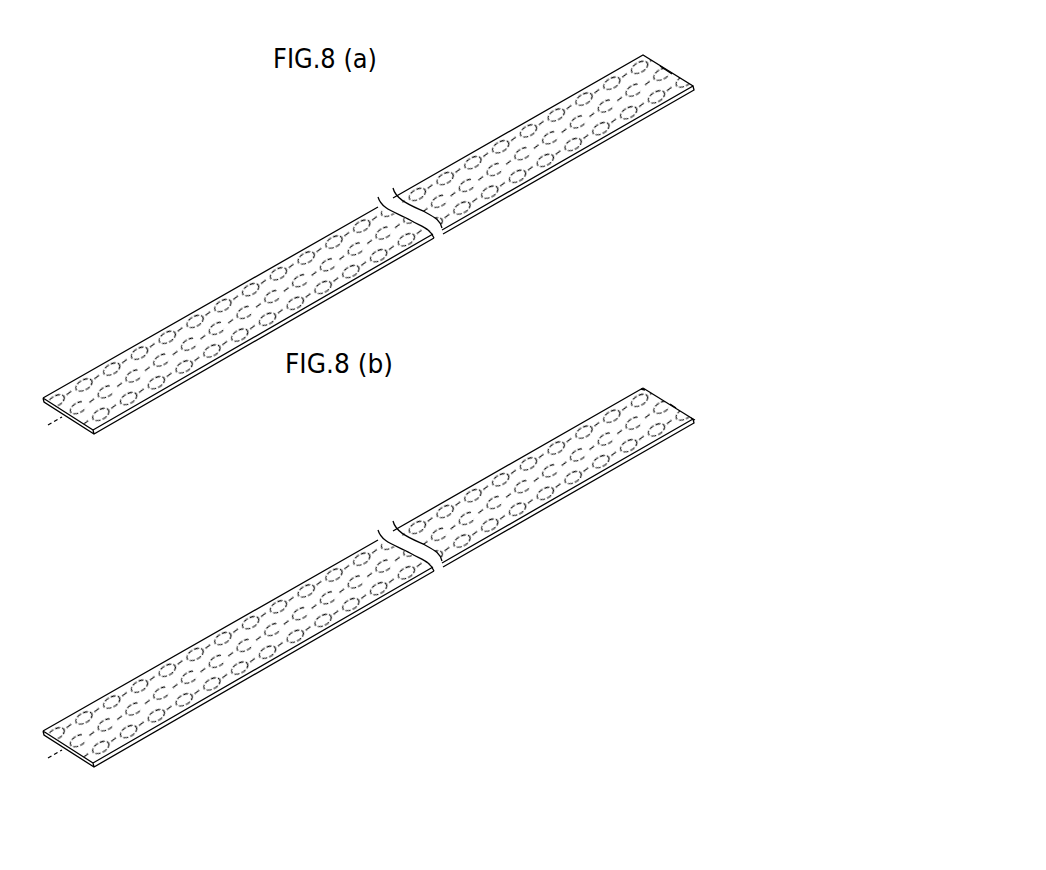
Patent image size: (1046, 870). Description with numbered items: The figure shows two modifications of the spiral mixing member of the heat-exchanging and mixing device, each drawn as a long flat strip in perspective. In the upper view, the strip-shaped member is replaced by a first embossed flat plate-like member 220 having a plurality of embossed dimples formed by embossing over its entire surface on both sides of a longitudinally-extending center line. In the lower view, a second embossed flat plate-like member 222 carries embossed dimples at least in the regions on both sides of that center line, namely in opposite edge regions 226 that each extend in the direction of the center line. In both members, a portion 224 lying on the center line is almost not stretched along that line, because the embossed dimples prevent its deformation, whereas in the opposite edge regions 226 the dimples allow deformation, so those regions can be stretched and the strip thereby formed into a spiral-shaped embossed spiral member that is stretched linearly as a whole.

The first embossed flat plate-like member 220 is at (368, 218).
The second embossed flat plate-like member 222 is at (398, 543).
The portion on the center line 224 is at (667, 402).
The opposite edge regions 226 is at (643, 388).